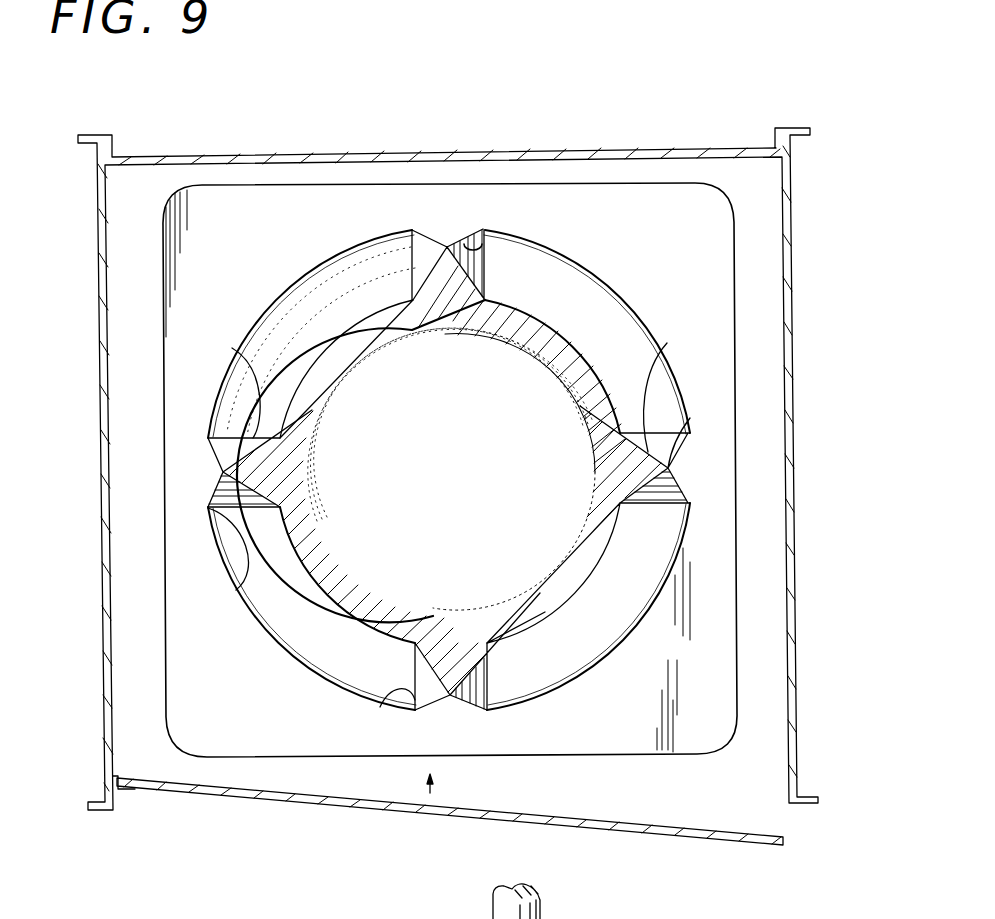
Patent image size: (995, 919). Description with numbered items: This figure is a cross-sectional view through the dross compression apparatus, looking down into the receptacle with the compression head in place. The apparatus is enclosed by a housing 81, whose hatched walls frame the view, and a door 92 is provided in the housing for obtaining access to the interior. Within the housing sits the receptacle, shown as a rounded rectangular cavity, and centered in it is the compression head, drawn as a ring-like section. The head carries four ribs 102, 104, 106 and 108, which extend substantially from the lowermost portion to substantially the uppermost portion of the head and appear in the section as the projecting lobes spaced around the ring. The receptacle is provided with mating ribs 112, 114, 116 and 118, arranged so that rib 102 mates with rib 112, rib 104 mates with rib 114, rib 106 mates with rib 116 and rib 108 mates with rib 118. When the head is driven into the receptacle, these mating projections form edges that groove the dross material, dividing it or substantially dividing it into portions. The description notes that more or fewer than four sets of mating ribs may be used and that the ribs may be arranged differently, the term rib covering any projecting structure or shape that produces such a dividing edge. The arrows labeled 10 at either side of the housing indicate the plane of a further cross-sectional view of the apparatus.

The housing 81 is at (790, 262).
The door 92 is at (724, 840).
The section line 10 is at (92, 508).
The rib 102 is at (487, 660).
The rib 104 is at (238, 346).
The rib 106 is at (655, 352).
The rib 108 is at (430, 277).
The mating rib 112 is at (412, 698).
The mating rib 114 is at (233, 591).
The mating rib 116 is at (690, 428).
The mating rib 118 is at (488, 238).